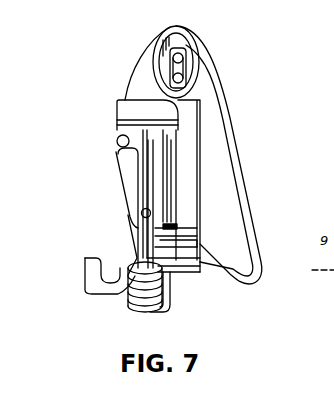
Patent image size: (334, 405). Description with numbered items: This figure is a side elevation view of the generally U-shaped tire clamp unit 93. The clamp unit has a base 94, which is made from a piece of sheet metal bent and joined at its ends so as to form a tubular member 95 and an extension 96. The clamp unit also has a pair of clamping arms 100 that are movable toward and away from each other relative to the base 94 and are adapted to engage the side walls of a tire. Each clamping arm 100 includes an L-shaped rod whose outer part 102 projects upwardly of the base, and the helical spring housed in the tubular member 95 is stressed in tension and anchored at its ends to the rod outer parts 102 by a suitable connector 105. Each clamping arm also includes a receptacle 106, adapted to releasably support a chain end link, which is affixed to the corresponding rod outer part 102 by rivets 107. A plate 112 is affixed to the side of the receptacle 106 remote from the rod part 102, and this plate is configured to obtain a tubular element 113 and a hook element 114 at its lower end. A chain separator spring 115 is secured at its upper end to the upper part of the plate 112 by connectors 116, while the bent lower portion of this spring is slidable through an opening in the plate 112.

The clamping arm 100 is at (137, 78).
The chain separator spring 115 is at (226, 67).
The connectors 116 is at (183, 79).
The receptacle 106 is at (115, 107).
The plate 112 is at (190, 162).
The tubular element 113 is at (197, 241).
The rivets 107 is at (117, 142).
The outer part 102 is at (138, 178).
The clamp unit 93 is at (122, 200).
The connector 105 is at (150, 268).
The tubular member 95 is at (130, 304).
The base 94 is at (172, 305).
The extension 96 is at (205, 280).
The hook element 114 is at (85, 275).